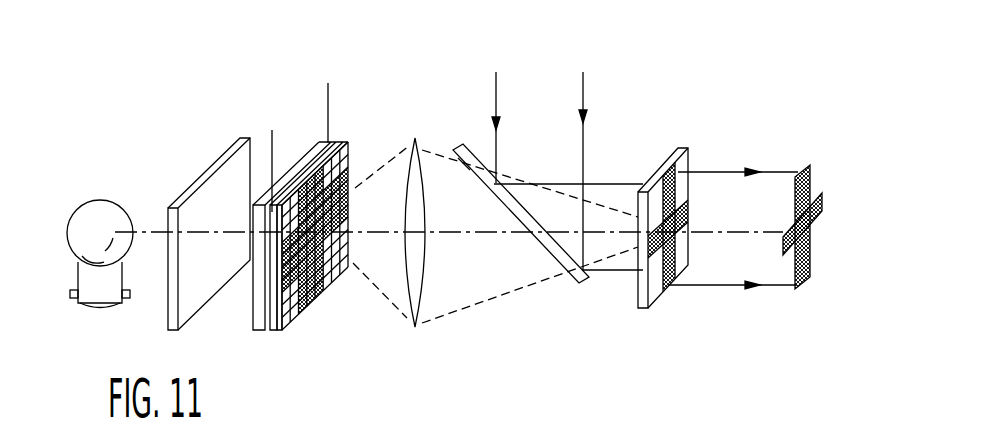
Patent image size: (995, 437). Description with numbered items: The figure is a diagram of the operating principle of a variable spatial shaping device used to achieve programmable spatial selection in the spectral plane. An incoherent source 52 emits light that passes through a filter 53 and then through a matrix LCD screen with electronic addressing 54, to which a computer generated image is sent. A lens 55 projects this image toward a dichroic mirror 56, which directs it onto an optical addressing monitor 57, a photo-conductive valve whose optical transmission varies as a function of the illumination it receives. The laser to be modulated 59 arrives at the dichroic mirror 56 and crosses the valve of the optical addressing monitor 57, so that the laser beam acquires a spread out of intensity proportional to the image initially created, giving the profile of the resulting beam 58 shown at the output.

The incoherent source 52 is at (100, 218).
The filter 53 is at (200, 207).
The matrix LCD screen with electronic addressing 54 is at (291, 341).
The lens 55 is at (418, 138).
The dichroic mirror 56 is at (548, 247).
The optical addressing monitor 57 is at (683, 148).
The profile of the resulting beam 58 is at (807, 180).
The laser to be modulated 59 is at (583, 102).